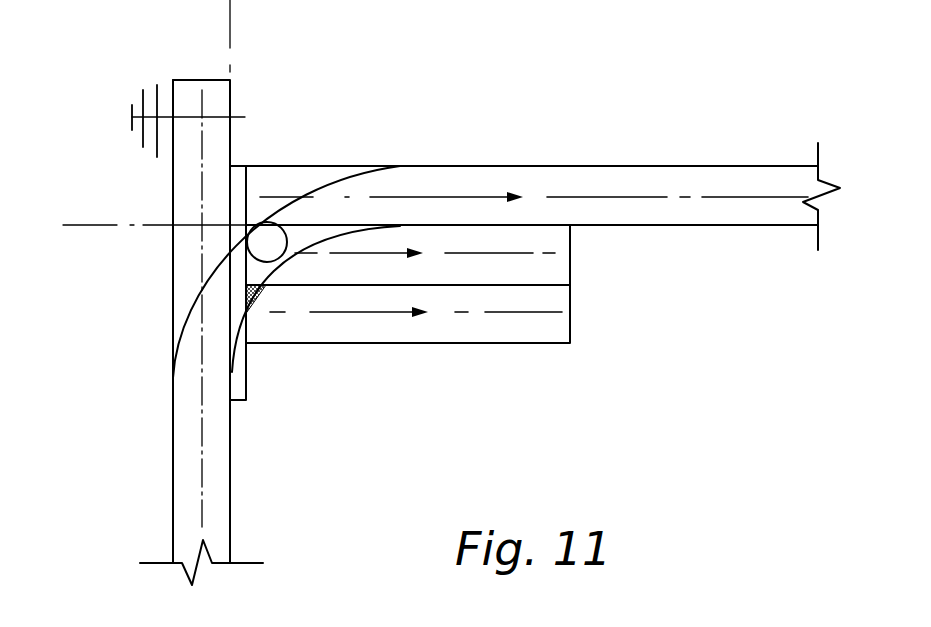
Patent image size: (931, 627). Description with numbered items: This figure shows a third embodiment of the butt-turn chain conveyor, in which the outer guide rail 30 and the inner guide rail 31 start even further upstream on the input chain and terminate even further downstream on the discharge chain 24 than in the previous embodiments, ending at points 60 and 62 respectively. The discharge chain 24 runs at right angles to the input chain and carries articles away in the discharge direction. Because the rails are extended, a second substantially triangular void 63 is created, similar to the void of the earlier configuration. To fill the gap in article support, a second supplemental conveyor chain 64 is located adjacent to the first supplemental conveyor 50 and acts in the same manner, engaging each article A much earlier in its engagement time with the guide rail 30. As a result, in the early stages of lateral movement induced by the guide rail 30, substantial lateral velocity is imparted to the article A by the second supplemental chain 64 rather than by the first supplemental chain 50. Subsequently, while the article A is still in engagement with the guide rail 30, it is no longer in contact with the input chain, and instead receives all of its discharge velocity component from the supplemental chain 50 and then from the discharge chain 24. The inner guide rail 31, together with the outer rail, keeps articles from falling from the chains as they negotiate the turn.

The discharge chain 24 is at (630, 173).
The outer guide rail 30 is at (218, 257).
The inner guide rail 31 is at (300, 254).
The first supplemental conveyor 50 is at (563, 268).
The termination point of inner guide rail 60 is at (172, 376).
The termination point of outer guide rail 62 is at (383, 165).
The second substantially triangular void 63 is at (264, 300).
The second supplemental conveyor chain 64 is at (560, 328).
The article A is at (274, 238).